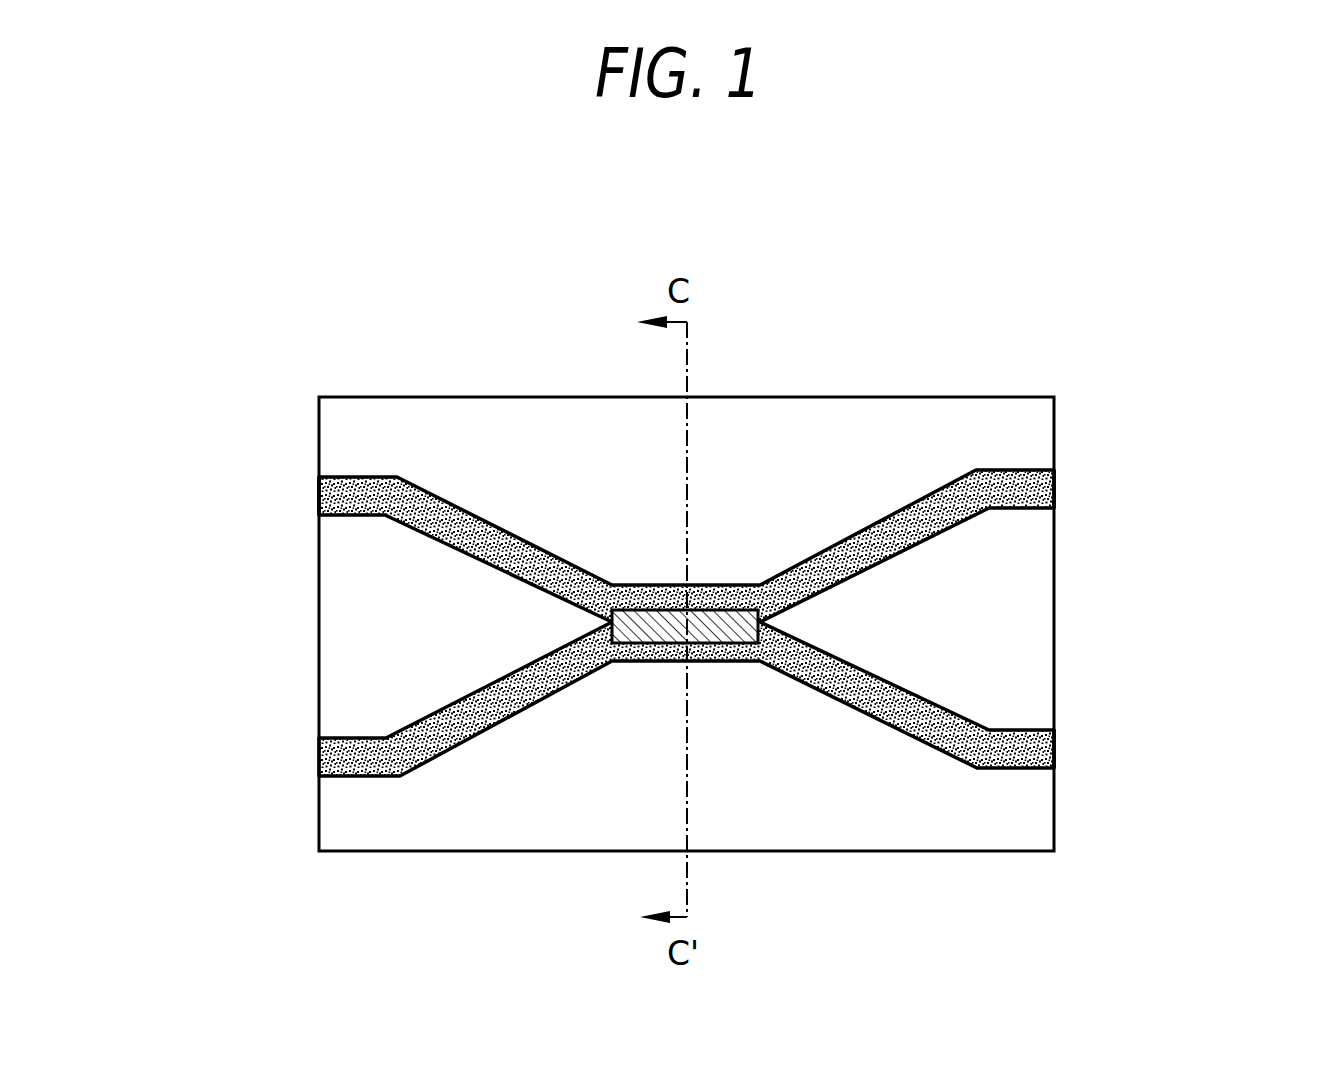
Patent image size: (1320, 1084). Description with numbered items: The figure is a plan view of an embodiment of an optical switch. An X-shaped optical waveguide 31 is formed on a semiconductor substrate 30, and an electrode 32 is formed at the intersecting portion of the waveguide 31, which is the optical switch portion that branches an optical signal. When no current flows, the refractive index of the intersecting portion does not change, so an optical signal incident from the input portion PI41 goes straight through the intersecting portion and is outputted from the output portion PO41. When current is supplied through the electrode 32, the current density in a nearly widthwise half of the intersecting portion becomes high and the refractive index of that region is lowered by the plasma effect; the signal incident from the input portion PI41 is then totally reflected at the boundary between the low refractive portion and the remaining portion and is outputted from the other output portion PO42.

The semiconductor substrate 30 is at (507, 397).
The optical waveguide 31 is at (930, 512).
The electrode 32 is at (667, 628).
The input portion PI41 is at (320, 500).
The output portion PO42 is at (1055, 485).
The output portion PO41 is at (1055, 748).